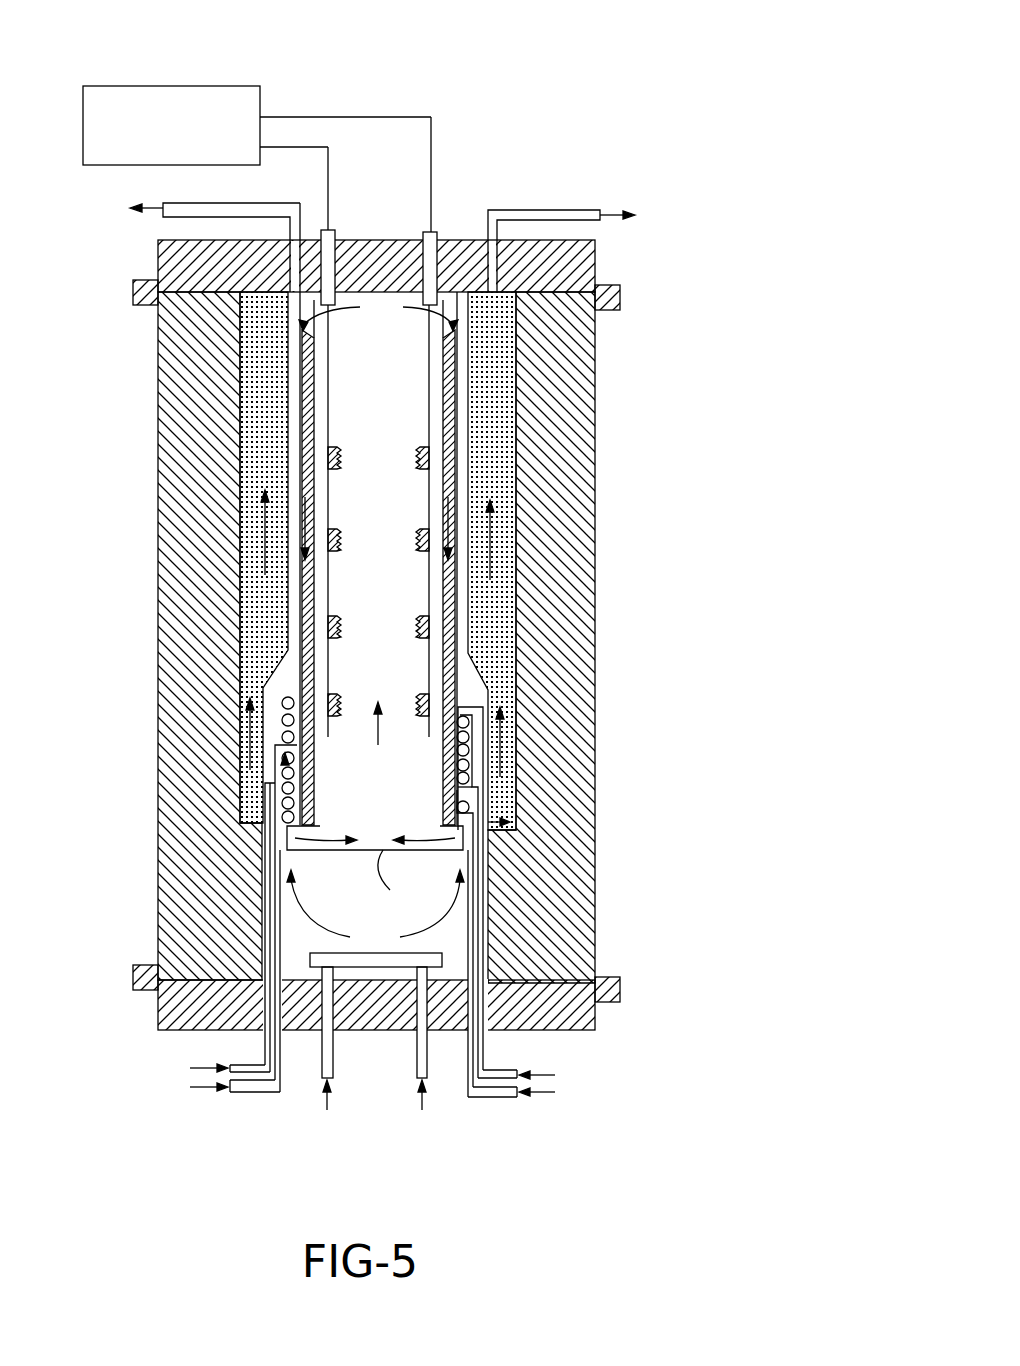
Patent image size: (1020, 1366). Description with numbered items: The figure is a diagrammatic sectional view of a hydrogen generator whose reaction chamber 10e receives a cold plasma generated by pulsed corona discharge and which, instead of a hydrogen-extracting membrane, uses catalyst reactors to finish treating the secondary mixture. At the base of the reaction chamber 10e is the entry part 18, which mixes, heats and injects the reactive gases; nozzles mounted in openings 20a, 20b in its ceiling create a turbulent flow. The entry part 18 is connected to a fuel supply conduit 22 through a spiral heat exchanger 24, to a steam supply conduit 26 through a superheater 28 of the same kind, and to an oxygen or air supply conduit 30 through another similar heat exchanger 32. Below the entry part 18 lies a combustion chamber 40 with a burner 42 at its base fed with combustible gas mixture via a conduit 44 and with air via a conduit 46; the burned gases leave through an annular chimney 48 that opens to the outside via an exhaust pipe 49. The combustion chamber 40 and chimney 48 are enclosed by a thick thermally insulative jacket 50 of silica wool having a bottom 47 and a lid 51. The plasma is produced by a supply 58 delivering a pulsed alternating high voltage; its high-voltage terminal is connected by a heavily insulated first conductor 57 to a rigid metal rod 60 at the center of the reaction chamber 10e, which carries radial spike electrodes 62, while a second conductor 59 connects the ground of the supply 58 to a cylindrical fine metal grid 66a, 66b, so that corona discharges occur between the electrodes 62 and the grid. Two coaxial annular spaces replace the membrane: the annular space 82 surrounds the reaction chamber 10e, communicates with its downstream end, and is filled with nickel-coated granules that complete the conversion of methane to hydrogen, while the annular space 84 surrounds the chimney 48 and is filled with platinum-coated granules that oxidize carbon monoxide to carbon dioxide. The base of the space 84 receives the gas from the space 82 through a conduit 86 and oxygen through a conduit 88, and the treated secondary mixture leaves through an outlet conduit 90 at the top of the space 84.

The reaction chamber 10e is at (387, 407).
The entry part 18 is at (380, 863).
The opening 20a is at (455, 787).
The opening 20b is at (300, 800).
The fuel supply conduit 22 is at (536, 1094).
The spiral heat exchanger 24 is at (490, 812).
The steam supply conduit 26 is at (209, 1061).
The superheater 28 is at (273, 747).
The oxygen supply conduit 30 is at (541, 1069).
The heat exchanger 32 is at (472, 740).
The combustion chamber 40 is at (438, 950).
The burner 42 is at (307, 950).
The conduit 44 is at (425, 1065).
The conduit 46 is at (328, 1065).
The bottom 47 is at (590, 1010).
The annular chimney 48 is at (467, 692).
The exhaust pipe 49 is at (189, 239).
The thermally insulative jacket 50 is at (547, 638).
The lid 51 is at (565, 272).
The first conductor 57 is at (318, 117).
The supply 58 is at (173, 113).
The second conductor 59 is at (340, 147).
The rigid metal rod 60 is at (327, 487).
The radial electrodes 62 is at (431, 490).
The grid 66a is at (425, 627).
The grid 66b is at (335, 455).
The annular space 82 is at (457, 410).
The annular space 84 is at (485, 593).
The conduit 86 is at (385, 845).
The conduit 88 is at (214, 1089).
The outlet conduit 90 is at (584, 244).